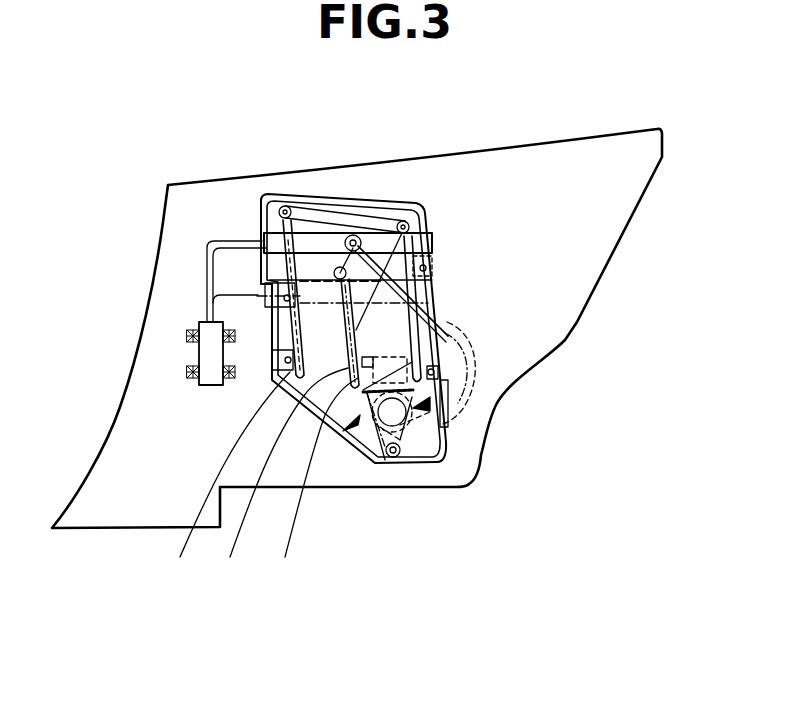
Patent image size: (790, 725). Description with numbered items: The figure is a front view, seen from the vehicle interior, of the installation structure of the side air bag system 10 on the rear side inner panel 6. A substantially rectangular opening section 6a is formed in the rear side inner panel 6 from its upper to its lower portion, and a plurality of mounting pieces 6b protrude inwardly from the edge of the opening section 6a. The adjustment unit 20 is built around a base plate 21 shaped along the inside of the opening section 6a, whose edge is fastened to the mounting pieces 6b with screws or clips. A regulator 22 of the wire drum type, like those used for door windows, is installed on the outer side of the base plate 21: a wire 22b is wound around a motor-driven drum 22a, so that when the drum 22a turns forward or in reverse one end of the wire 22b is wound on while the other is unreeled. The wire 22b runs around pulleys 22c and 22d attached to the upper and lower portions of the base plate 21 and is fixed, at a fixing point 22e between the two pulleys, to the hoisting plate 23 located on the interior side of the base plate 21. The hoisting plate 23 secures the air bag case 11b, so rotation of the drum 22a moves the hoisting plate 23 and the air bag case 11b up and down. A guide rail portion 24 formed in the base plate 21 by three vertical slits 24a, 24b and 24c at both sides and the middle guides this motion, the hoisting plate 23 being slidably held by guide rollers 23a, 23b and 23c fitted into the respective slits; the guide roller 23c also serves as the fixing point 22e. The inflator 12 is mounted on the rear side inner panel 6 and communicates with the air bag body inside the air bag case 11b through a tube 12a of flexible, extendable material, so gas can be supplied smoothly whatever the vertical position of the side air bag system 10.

The rear side inner panel 6 is at (593, 253).
The opening section 6a is at (365, 428).
The mounting pieces 6b is at (270, 291).
The side air bag system 10 is at (370, 196).
The air bag case 11b is at (423, 216).
The inflator 12 is at (209, 386).
The tube 12a is at (207, 270).
The adjustment unit 20 is at (340, 418).
The base plate 21 is at (430, 446).
The regulator 22 is at (432, 408).
The drum 22a is at (380, 468).
The wire 22b is at (458, 322).
The pulley 22c is at (352, 232).
The pulley 22d is at (410, 478).
The fixing point 22e is at (456, 291).
The hoisting plate 23 is at (383, 222).
The guide roller 23a is at (285, 205).
The guide roller 23b is at (408, 207).
The guide roller 23c is at (433, 280).
The guide rail portion 24 is at (247, 498).
The slit 24a is at (219, 480).
The slit 24b is at (310, 483).
The slit 24c is at (276, 478).